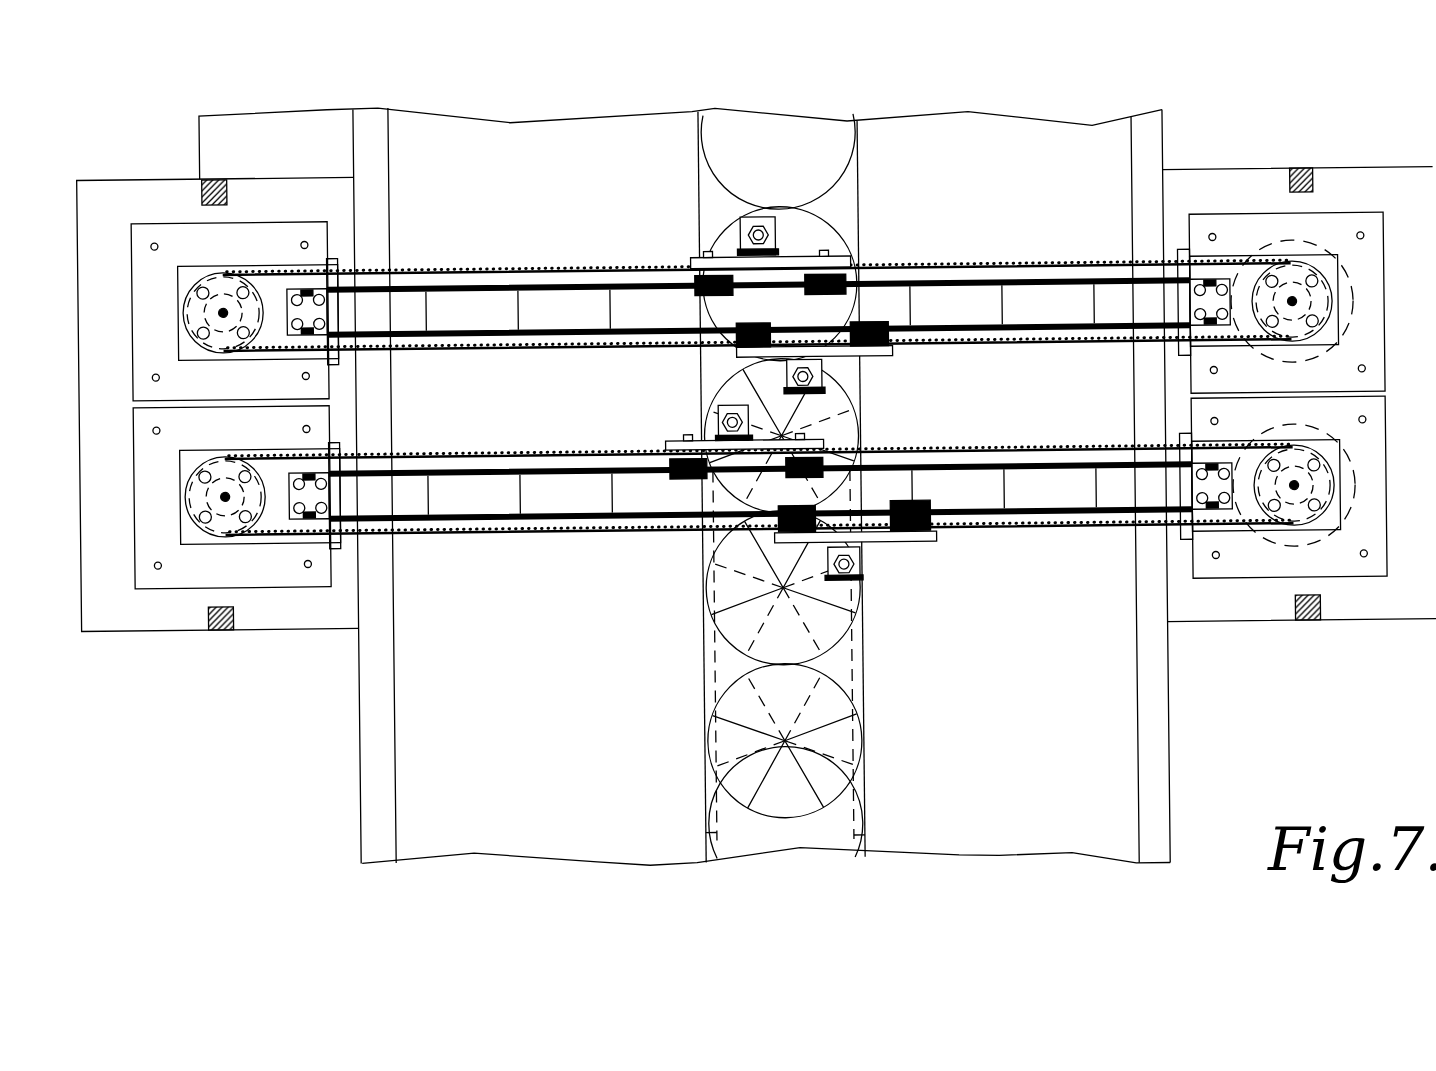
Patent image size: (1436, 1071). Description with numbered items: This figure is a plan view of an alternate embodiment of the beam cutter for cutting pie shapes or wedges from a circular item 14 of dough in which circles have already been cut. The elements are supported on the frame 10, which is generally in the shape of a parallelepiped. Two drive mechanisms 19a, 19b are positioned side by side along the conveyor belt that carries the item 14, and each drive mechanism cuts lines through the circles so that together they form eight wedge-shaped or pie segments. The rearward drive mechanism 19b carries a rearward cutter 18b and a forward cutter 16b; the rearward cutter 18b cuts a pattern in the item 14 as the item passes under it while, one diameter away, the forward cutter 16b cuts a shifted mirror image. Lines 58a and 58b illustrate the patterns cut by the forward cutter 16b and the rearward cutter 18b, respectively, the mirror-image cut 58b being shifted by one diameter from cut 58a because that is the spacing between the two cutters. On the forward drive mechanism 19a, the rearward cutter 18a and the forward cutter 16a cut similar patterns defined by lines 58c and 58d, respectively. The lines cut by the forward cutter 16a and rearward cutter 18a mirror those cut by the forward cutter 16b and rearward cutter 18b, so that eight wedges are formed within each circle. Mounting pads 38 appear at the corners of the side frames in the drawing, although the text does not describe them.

The frame 10 is at (1375, 175).
The circular item 14 is at (793, 135).
The forward cutter 16a is at (861, 569).
The forward cutter 16b is at (826, 377).
The rearward cutter 18a is at (721, 419).
The rearward cutter 18b is at (748, 229).
The forward drive mechanism 19a is at (1212, 665).
The rearward drive mechanism 19b is at (1208, 126).
The mounting pad 38 is at (217, 172).
The line 58a is at (693, 873).
The line 58b is at (756, 842).
The line 58c is at (824, 842).
The line 58d is at (877, 855).